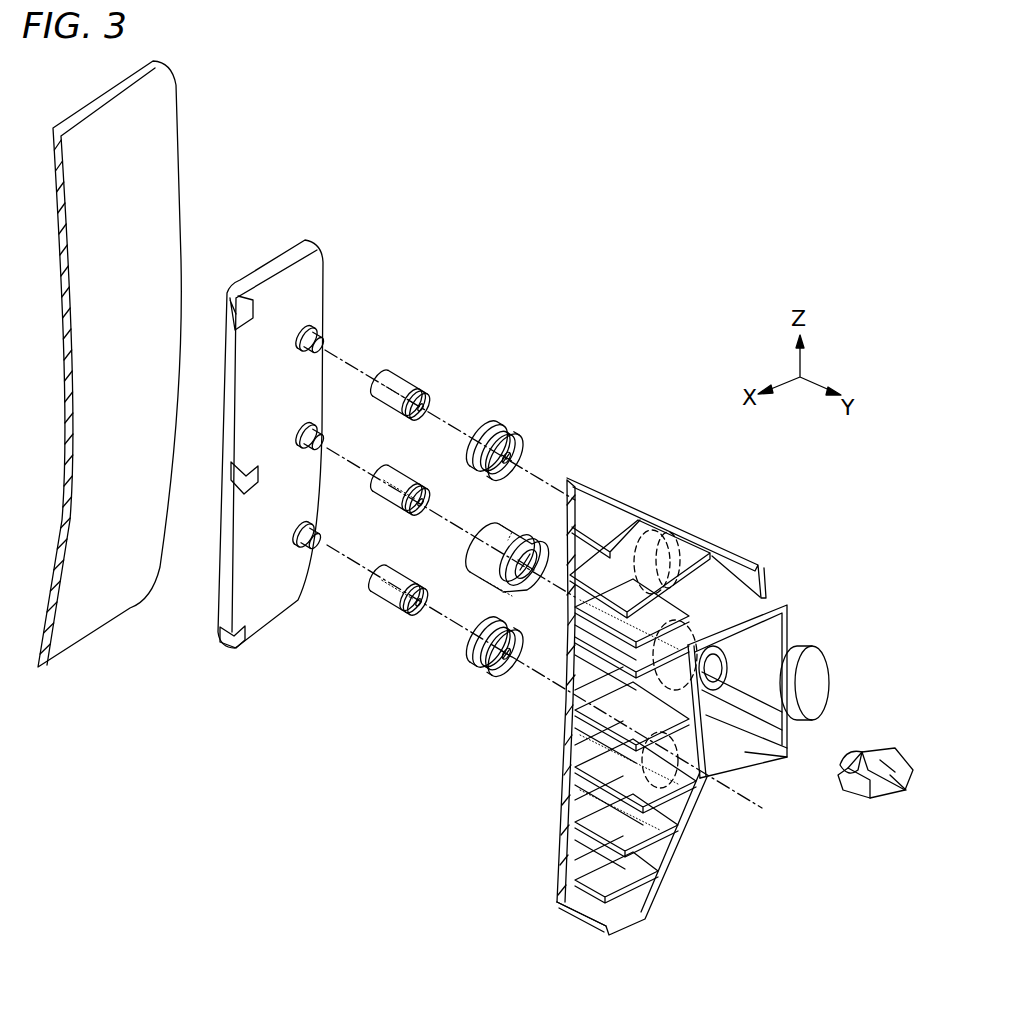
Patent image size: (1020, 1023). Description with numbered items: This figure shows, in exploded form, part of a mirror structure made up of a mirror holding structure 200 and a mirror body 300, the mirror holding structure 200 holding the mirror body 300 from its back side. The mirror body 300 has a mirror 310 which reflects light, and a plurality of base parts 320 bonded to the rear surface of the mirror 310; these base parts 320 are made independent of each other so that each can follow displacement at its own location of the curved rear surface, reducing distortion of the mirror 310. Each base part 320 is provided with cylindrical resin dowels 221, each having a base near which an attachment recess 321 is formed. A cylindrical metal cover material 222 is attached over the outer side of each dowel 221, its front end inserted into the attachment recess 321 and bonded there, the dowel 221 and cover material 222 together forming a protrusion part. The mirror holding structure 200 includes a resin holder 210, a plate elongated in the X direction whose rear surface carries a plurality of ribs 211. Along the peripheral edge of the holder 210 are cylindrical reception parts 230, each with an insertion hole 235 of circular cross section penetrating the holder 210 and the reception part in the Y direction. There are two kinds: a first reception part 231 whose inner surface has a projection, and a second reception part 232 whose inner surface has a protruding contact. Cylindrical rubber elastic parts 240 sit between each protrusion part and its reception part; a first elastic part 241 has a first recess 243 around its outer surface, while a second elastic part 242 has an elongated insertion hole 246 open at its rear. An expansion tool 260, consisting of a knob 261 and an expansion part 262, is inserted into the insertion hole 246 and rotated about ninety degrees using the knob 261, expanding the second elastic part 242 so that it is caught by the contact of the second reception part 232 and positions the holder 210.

The mirror holding structure 200 is at (738, 719).
The holder 210 is at (665, 843).
The ribs 211 is at (615, 890).
The dowel 221 is at (320, 346).
The cover material 222 is at (400, 377).
The reception parts 230 is at (777, 629).
The first reception part 231 is at (660, 525).
The second reception part 232 is at (720, 653).
The insertion hole 235 is at (720, 687).
The elastic parts 240 is at (469, 547).
The first elastic part 241 is at (492, 430).
The second elastic part 242 is at (476, 550).
The first recess 243 is at (491, 666).
The insertion hole 246 is at (518, 574).
The expansion tool 260 is at (879, 776).
The knob 261 is at (897, 792).
The expansion part 262 is at (847, 758).
The mirror body 300 is at (152, 207).
The mirror 310 is at (142, 142).
The base parts 320 is at (313, 269).
The attachment recess 321 is at (298, 553).